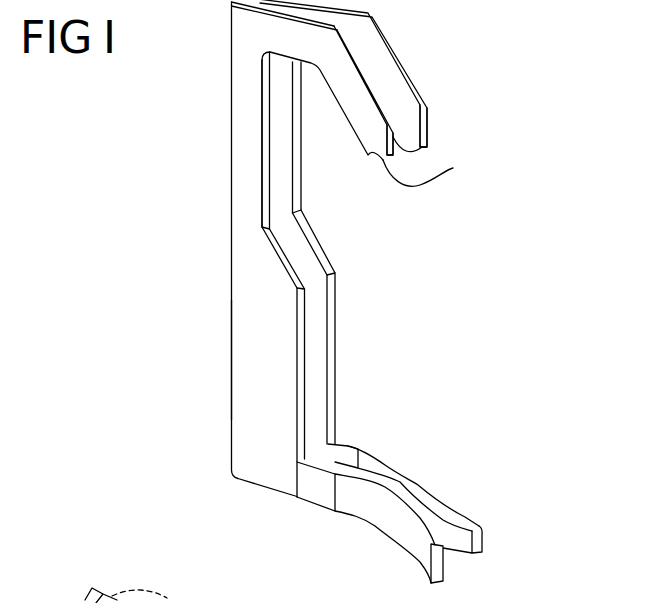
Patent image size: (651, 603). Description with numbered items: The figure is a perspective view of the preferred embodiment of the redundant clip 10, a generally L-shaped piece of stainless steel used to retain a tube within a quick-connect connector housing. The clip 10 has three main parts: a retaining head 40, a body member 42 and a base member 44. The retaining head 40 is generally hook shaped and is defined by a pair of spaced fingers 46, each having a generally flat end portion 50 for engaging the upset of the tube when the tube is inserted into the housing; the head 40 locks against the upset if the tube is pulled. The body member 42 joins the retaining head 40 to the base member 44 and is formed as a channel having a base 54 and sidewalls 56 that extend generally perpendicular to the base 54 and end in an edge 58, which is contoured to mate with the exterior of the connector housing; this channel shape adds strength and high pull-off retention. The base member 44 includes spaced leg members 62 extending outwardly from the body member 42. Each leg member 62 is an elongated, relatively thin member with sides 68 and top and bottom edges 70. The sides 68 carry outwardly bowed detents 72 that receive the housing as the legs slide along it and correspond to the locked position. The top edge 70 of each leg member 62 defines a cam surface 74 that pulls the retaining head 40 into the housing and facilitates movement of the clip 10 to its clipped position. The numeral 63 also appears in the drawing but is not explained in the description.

The redundant clip 10 is at (152, 146).
The retaining head 40 is at (412, 49).
The body member 42 is at (212, 280).
The base member 44 is at (272, 507).
The spaced fingers 46 is at (421, 117).
The flat end portion 50 is at (453, 168).
The base 54 is at (231, 95).
The sidewalls 56 is at (250, 368).
The edge 58 is at (270, 168).
The leg members 62 is at (472, 562).
The hook web 63 is at (376, 547).
The sides 68 is at (290, 487).
The top and bottom edges 70 is at (360, 446).
The detents 72 is at (348, 457).
The cam surface 74 is at (413, 488).